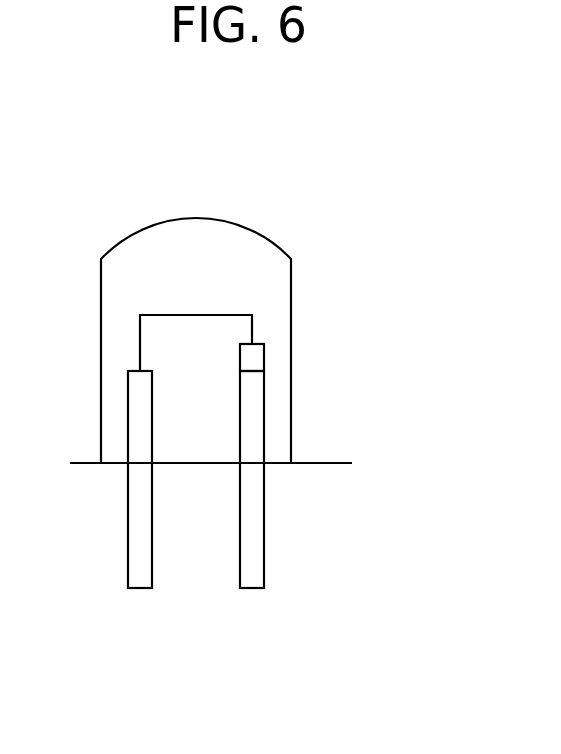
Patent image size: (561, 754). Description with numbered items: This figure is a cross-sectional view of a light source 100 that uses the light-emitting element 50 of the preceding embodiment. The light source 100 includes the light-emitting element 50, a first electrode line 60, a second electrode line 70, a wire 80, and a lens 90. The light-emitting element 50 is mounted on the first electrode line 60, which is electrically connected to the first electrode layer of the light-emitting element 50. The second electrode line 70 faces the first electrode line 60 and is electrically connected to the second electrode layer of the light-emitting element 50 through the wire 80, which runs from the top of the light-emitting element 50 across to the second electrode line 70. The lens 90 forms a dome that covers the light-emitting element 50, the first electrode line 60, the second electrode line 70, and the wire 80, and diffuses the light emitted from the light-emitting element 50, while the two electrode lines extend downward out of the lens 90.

The light source 100 is at (224, 170).
The lens 90 is at (274, 240).
The wire 80 is at (230, 313).
The light-emitting element 50 is at (256, 364).
The second electrode line 70 is at (137, 570).
The first electrode line 60 is at (250, 570).